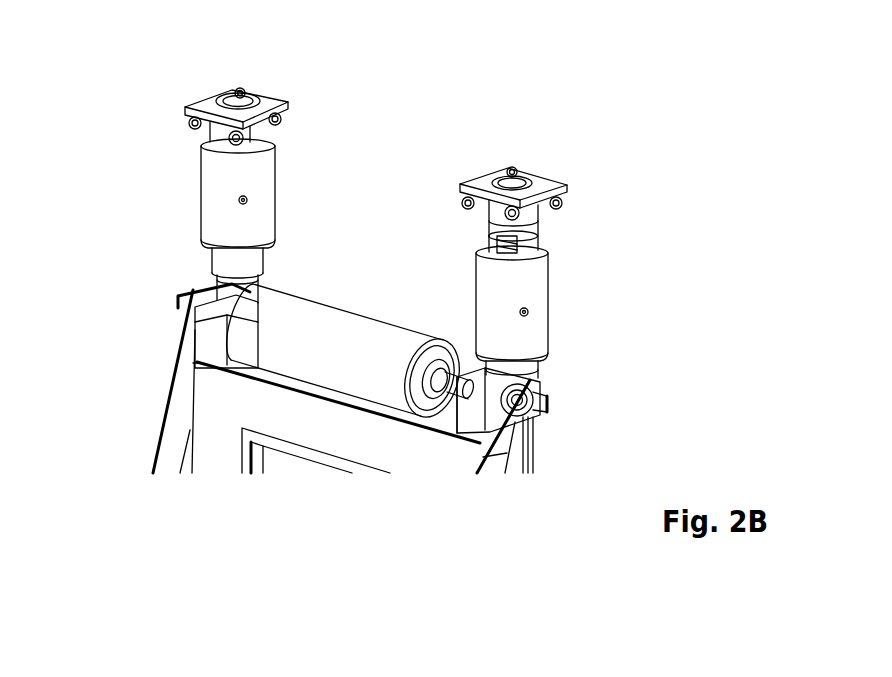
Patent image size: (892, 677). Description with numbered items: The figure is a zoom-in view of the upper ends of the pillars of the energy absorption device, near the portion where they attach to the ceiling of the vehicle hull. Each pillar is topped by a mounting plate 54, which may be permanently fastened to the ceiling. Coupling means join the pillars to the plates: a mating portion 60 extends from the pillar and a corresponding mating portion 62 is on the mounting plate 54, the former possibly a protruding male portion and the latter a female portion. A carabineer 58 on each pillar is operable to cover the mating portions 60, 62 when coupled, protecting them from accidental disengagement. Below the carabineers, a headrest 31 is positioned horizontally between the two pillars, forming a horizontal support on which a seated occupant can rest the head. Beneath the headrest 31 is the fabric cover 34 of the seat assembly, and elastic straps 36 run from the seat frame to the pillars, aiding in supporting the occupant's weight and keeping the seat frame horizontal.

The headrest 31 is at (357, 366).
The fabric cover 34 is at (253, 419).
The elastic straps 36 is at (178, 400).
The mounting plates 54 is at (500, 183).
The carabineer 58 is at (241, 194).
The mating portion 60 is at (510, 235).
The mating portion 62 is at (537, 214).